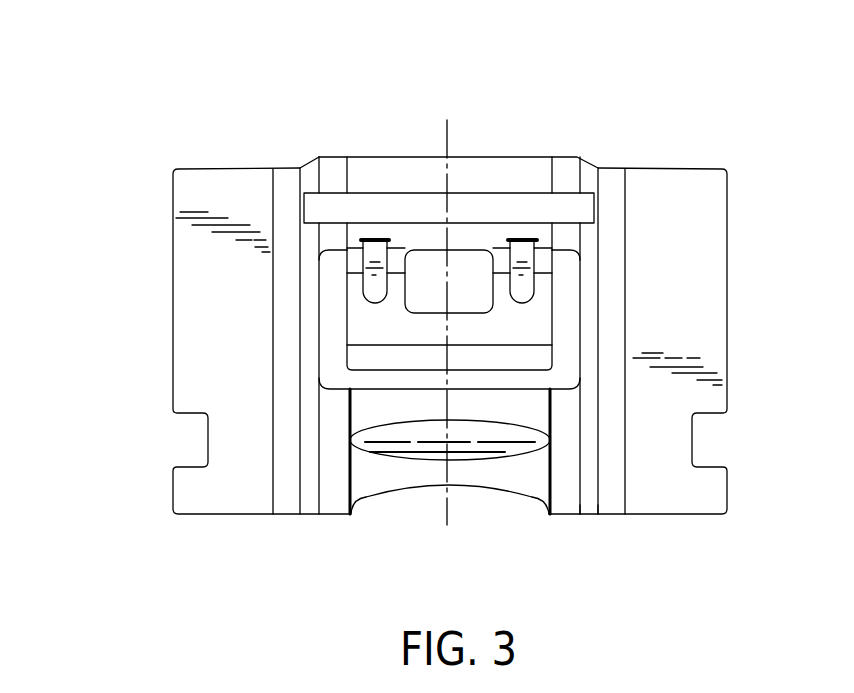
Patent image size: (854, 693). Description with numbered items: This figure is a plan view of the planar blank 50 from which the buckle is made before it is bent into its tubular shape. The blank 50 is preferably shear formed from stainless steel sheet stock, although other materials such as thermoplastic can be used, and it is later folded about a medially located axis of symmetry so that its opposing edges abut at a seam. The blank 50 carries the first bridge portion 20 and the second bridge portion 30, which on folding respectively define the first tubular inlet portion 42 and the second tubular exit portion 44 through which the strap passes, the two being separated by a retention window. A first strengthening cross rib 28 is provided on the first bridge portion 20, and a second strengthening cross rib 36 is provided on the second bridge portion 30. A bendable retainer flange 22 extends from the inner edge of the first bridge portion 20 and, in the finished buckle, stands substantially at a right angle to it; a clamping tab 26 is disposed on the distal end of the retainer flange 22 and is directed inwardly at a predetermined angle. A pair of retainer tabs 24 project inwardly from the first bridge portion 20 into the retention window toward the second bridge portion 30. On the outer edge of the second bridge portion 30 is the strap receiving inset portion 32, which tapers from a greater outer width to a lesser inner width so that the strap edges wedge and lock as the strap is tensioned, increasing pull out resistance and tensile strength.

The first bridge portion 20 is at (463, 170).
The retainer flange 22 is at (508, 332).
The retainer tabs 24 is at (372, 287).
The clamping tab 26 is at (378, 378).
The first strengthening cross rib 28 is at (523, 202).
The second bridge portion 30 is at (427, 485).
The strap receiving inset portion 32 is at (462, 490).
The second strengthening cross rib 36 is at (482, 440).
The first tubular inlet portion 42 is at (318, 157).
The second tubular exit portion 44 is at (588, 515).
The planar blank 50 is at (663, 158).